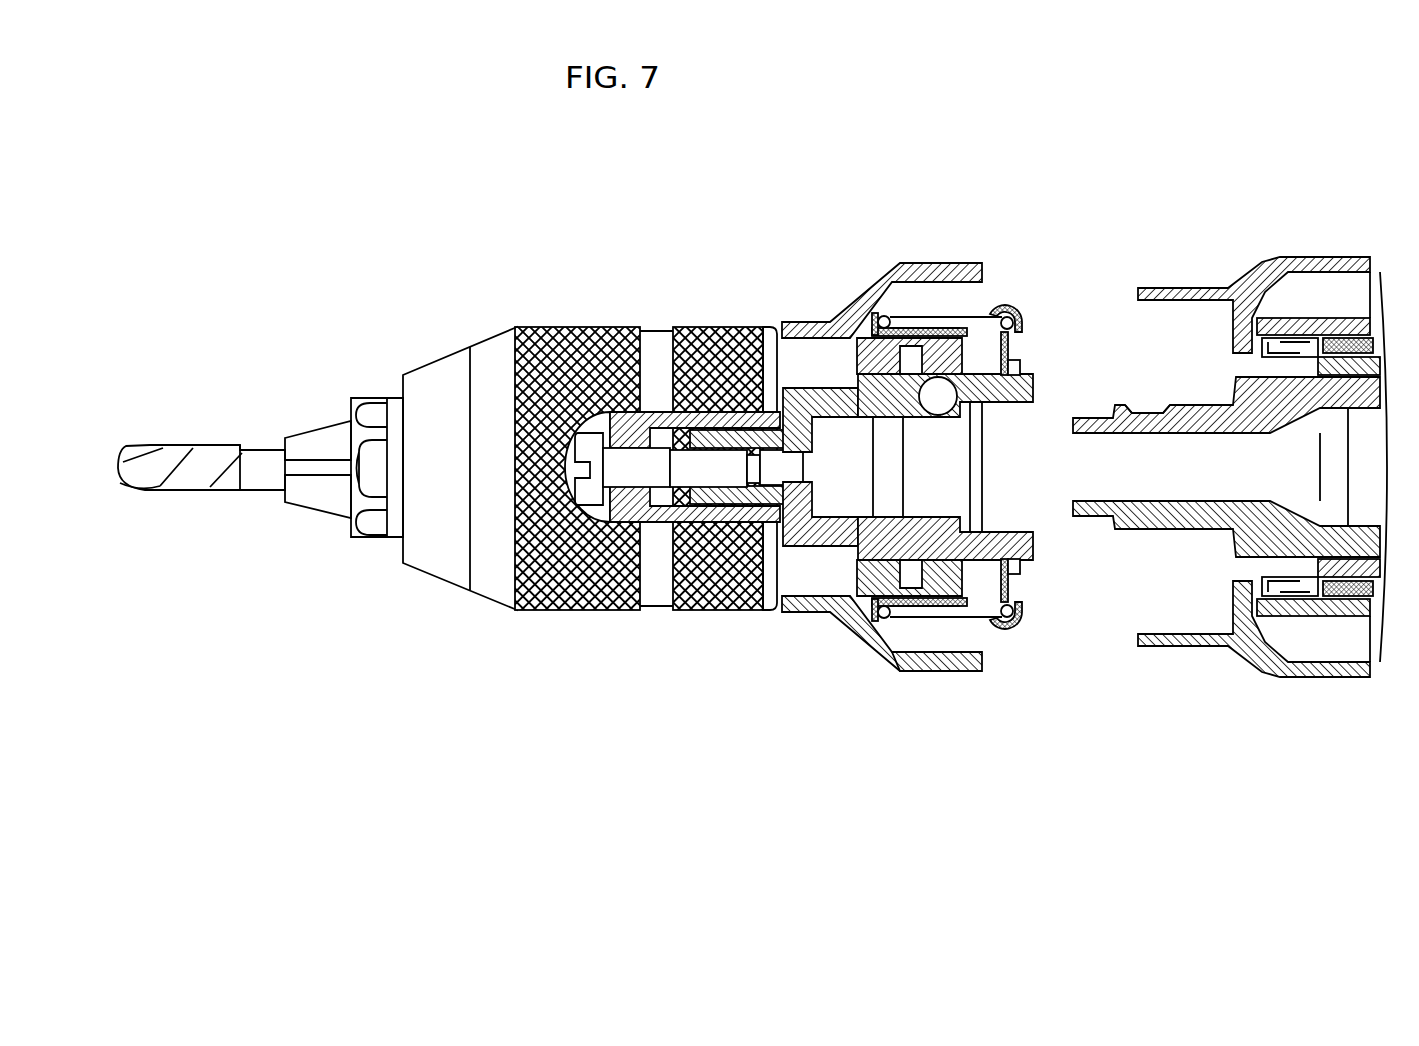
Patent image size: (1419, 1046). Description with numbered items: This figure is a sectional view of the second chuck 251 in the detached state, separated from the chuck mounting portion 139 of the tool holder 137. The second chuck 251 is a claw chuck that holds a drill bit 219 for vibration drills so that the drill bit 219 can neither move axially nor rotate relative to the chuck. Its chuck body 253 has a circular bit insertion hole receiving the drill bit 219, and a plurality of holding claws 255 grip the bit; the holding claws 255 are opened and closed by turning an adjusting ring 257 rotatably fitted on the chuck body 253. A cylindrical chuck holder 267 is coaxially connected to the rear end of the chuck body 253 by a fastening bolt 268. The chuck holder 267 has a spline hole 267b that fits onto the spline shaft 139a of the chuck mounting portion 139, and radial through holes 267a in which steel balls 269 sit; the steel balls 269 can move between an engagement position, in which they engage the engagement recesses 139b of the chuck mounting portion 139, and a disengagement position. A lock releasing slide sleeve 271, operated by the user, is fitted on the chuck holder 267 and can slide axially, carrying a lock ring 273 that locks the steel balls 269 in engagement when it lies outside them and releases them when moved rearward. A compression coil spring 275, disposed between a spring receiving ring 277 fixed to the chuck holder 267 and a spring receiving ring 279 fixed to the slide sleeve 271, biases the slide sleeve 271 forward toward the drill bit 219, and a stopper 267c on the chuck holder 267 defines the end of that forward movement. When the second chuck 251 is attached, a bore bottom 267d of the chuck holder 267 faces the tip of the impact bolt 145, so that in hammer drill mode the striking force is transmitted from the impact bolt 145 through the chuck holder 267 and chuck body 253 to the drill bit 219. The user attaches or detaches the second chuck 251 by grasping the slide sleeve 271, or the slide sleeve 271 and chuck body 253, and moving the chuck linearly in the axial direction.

The drill bit 219 is at (190, 445).
The second chuck 251 is at (472, 282).
The chuck body 253 is at (658, 622).
The holding claws 255 is at (320, 515).
The adjusting ring 257 is at (541, 326).
The fastening bolt 268 is at (653, 455).
The chuck holder 267 is at (812, 414).
The through holes 267a is at (913, 373).
The spline hole 267b is at (940, 528).
The stopper 267c is at (793, 604).
The bore bottom 267d is at (828, 376).
The steel balls 269 is at (936, 392).
The lock ring 273 is at (957, 333).
The compression coil spring 275 is at (948, 620).
The spring receiving ring 277 is at (880, 660).
The slide sleeve 271 is at (902, 672).
The spring receiving ring 279 is at (1012, 630).
The chuck mounting portion 139 is at (1195, 410).
The spline shaft 139a is at (1158, 527).
The engagement recesses 139b is at (1140, 410).
The tool holder 137 is at (1356, 348).
The impact bolt 145 is at (1357, 520).